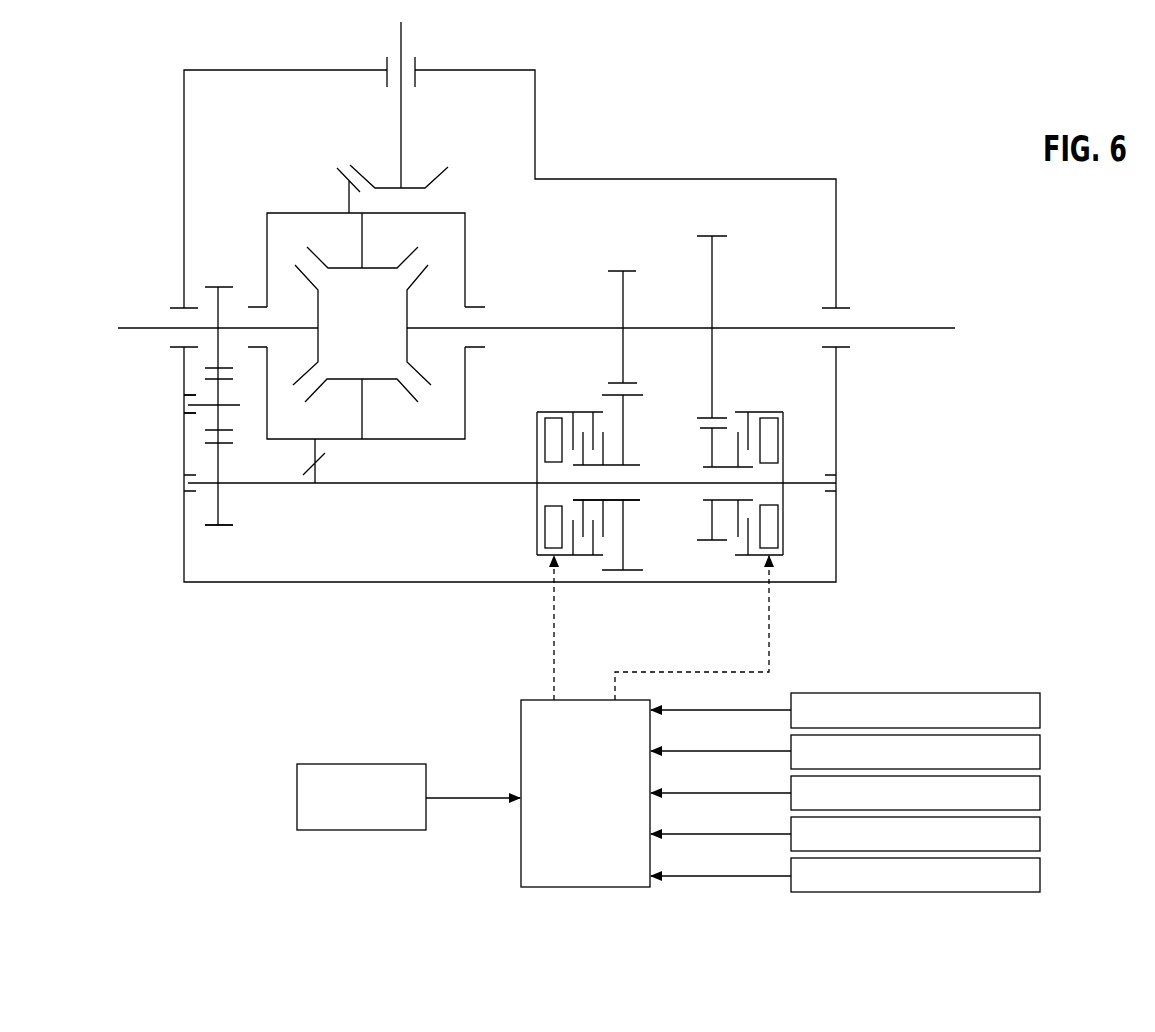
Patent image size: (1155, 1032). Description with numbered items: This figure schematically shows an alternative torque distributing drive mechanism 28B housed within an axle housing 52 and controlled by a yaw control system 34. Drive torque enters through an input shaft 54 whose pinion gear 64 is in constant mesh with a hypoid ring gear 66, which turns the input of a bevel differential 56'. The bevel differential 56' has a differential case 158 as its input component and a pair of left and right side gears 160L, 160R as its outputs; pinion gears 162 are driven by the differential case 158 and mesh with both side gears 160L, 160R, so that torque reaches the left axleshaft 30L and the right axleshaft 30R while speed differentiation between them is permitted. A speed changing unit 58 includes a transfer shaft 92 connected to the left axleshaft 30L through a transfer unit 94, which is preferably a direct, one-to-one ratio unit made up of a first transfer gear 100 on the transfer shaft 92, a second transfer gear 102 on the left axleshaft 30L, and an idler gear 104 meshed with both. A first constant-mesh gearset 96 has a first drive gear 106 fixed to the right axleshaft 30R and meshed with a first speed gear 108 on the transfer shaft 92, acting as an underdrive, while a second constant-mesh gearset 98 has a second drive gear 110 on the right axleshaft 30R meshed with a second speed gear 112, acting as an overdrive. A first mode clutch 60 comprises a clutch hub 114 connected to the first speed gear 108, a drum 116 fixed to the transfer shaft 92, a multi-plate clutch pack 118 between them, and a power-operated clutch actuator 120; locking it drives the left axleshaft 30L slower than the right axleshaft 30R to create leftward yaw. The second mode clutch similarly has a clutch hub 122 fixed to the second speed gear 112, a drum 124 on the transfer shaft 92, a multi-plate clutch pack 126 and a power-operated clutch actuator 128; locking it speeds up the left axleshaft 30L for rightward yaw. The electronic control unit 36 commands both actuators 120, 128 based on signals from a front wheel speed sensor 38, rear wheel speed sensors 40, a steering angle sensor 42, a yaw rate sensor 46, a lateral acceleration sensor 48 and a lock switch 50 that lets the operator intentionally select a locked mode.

The torque distributing drive mechanism 28B is at (753, 92).
The left axleshaft 30L is at (147, 327).
The right axleshaft 30R is at (929, 327).
The yaw control system 34 is at (477, 852).
The electronic control unit (ECU) 36 is at (533, 729).
The front wheel speed sensor 38 is at (1041, 710).
The rear wheel speed sensor 40 is at (1041, 752).
The steering angle sensor 42 is at (1041, 794).
The yaw rate sensor 46 is at (1041, 835).
The lateral acceleration sensor 48 is at (1041, 878).
The lock switch 50 is at (297, 785).
The axle housing 52 is at (837, 208).
The input shaft 54 is at (404, 36).
The bevel differential 56' is at (410, 271).
The speed changing unit 58 is at (661, 266).
The first mode clutch 60 is at (530, 538).
The pinion gear 64 is at (452, 176).
The hypoid ring gear 66 is at (322, 460).
The transfer shaft 92 is at (428, 487).
The transfer unit 94 is at (196, 446).
The first constant-mesh gearset 96 is at (646, 381).
The second constant-mesh gearset 98 is at (691, 421).
The first transfer gear 100 is at (232, 526).
The second transfer gear 102 is at (220, 286).
The idler gear 104 is at (215, 417).
The first drive gear 106 is at (620, 280).
The first speed gear 108 is at (632, 574).
The second drive gear 110 is at (714, 266).
The second speed gear 112 is at (716, 543).
The clutch hub 114 is at (610, 503).
The drum 116 is at (548, 411).
The multi-plate clutch pack 118 is at (584, 546).
The power-operated clutch actuator 120 is at (548, 451).
The clutch hub 122 is at (728, 501).
The drum 124 is at (749, 558).
The multi-plate clutch pack 126 is at (745, 438).
The power-operated clutch actuator 128 is at (776, 437).
The differential case 158 is at (467, 270).
The left side gear 160L is at (302, 383).
The right side gear 160R is at (407, 347).
The pinion gears 162 is at (372, 270).